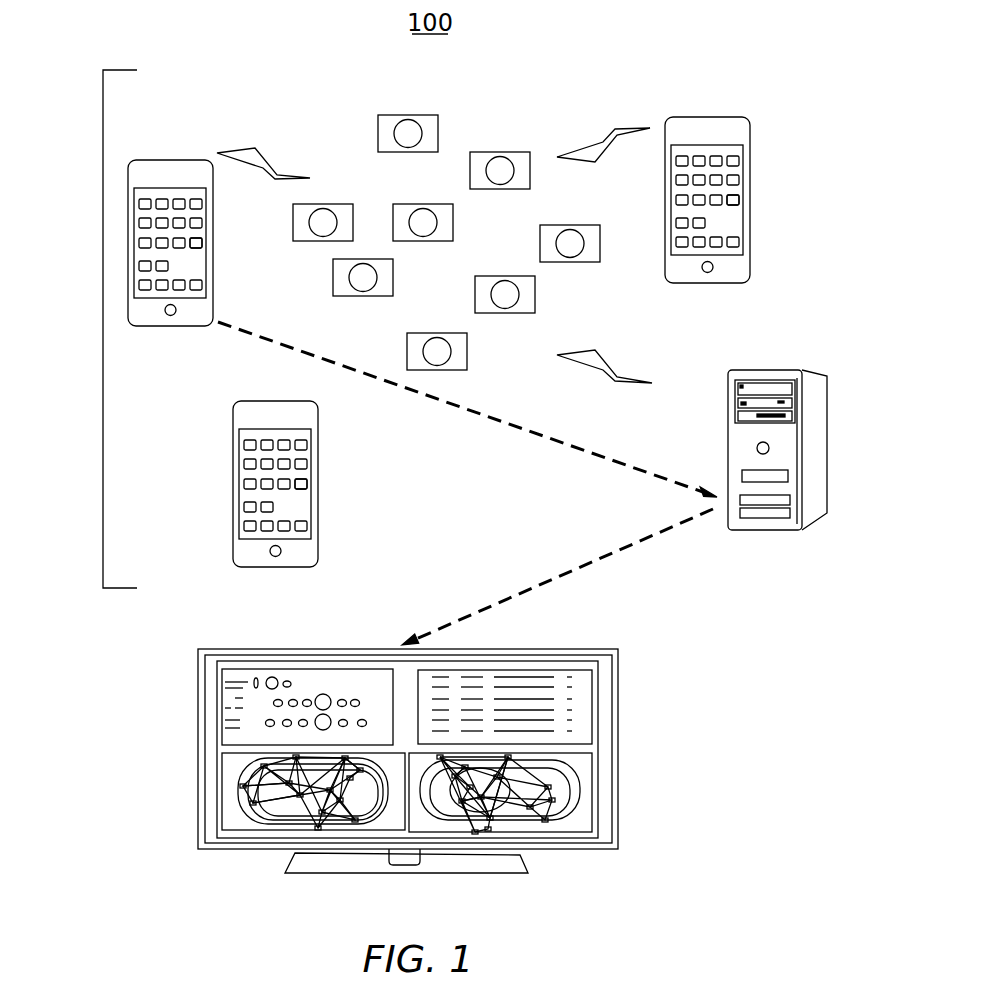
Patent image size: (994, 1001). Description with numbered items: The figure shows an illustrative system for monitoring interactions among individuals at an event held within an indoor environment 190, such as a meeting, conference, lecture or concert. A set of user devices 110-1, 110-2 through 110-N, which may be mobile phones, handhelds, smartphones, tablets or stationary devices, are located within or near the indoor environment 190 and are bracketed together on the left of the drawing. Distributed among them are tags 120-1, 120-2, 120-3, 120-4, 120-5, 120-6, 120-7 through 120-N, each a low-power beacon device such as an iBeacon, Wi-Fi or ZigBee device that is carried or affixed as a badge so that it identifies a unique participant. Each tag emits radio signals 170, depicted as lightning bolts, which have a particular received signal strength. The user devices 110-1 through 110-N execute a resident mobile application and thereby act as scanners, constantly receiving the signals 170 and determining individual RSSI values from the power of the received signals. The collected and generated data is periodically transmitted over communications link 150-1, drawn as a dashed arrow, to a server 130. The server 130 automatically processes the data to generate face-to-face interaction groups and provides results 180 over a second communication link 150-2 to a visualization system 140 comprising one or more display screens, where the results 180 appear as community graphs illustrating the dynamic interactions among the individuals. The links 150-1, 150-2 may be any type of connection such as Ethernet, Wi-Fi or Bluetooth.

The user device 110-1 is at (162, 160).
The user device 110-2 is at (712, 117).
The user device 110-N is at (233, 468).
The tag 120-1 is at (428, 115).
The tag 120-2 is at (490, 152).
The tag 120-3 is at (572, 225).
The tag 120-4 is at (435, 333).
The tag 120-5 is at (333, 278).
The tag 120-6 is at (343, 204).
The tag 120-7 is at (418, 204).
The tag 120-N is at (500, 276).
The server 130 is at (771, 370).
The visualization system 140 is at (405, 796).
The communications link 150-1 is at (493, 418).
The communication link 150-2 is at (507, 592).
The signals 170 is at (266, 150).
The results 180 is at (290, 817).
The indoor environment 190 is at (103, 297).